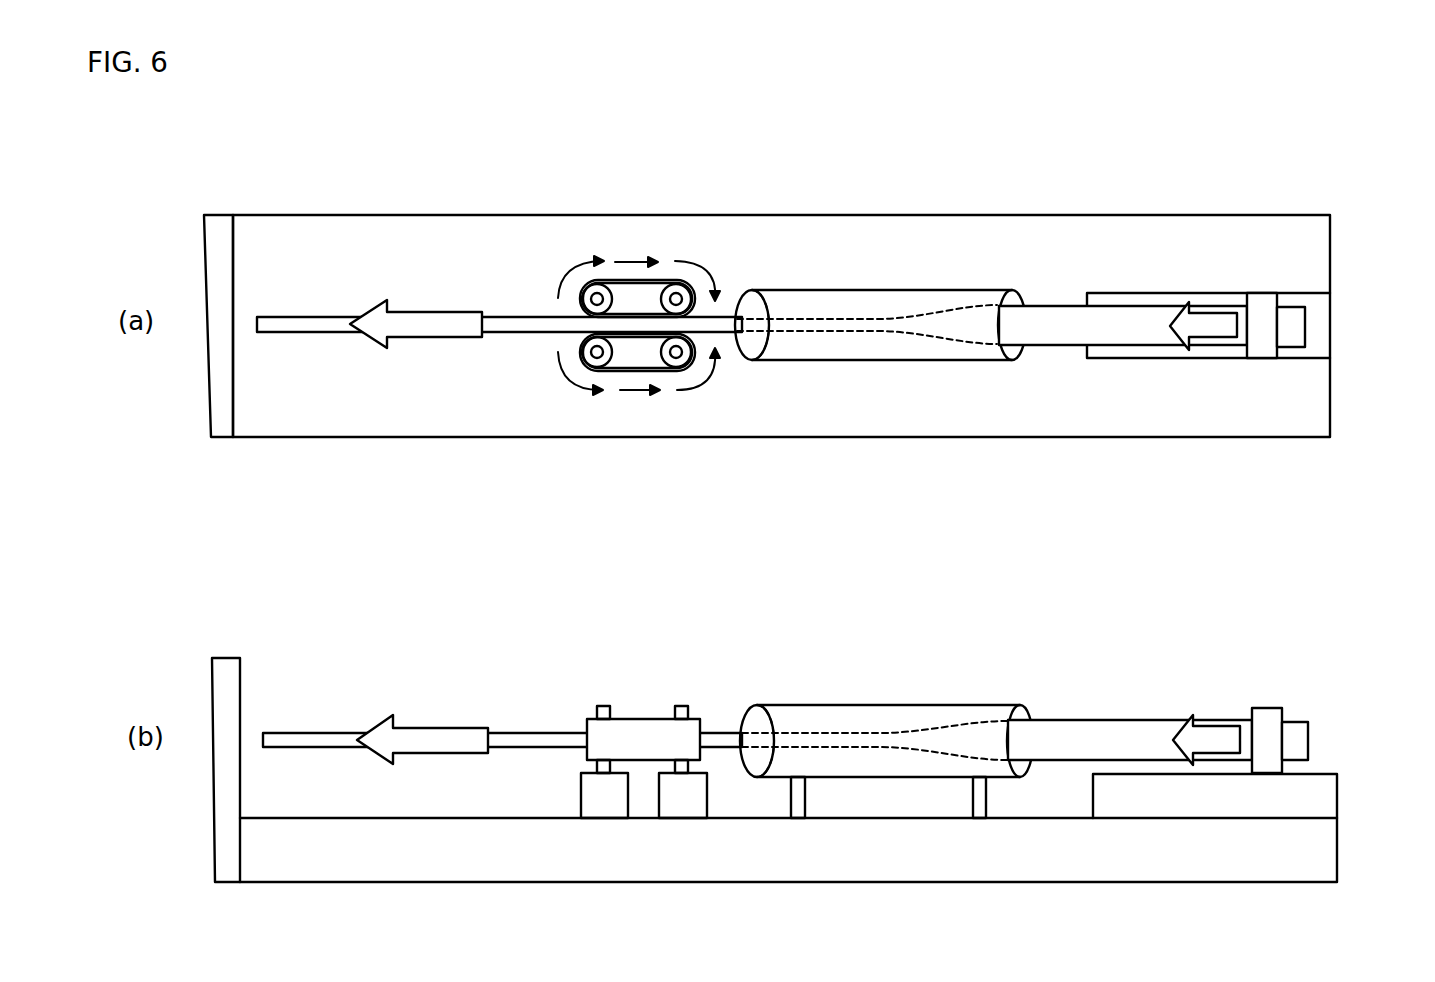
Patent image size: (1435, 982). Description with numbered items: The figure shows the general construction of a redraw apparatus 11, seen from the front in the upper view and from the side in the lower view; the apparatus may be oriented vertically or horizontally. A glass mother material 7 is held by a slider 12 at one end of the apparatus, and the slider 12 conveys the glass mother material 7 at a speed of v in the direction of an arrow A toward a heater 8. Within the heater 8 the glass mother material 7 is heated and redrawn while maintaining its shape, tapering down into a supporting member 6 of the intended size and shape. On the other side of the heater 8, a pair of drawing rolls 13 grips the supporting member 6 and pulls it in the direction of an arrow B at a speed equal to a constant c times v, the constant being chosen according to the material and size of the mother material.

The supporting member 6 is at (289, 316).
The arrow B is at (430, 312).
The pair of drawing rolls 13 is at (623, 280).
The heater 8 is at (883, 290).
The glass mother material 7 is at (1057, 306).
The arrow A is at (1203, 307).
The slider 12 is at (1267, 293).
The redraw apparatus 11 is at (1330, 397).